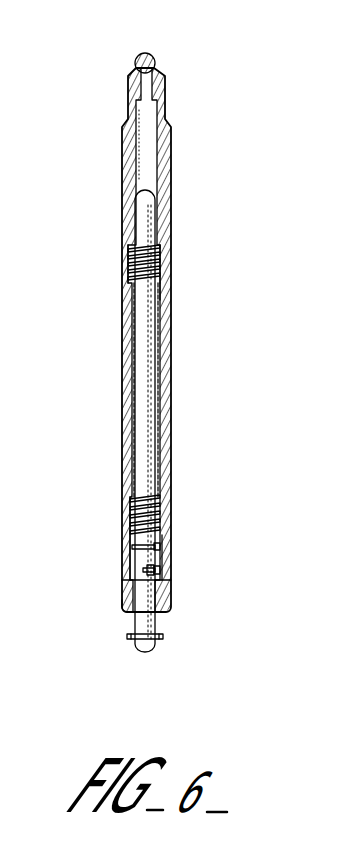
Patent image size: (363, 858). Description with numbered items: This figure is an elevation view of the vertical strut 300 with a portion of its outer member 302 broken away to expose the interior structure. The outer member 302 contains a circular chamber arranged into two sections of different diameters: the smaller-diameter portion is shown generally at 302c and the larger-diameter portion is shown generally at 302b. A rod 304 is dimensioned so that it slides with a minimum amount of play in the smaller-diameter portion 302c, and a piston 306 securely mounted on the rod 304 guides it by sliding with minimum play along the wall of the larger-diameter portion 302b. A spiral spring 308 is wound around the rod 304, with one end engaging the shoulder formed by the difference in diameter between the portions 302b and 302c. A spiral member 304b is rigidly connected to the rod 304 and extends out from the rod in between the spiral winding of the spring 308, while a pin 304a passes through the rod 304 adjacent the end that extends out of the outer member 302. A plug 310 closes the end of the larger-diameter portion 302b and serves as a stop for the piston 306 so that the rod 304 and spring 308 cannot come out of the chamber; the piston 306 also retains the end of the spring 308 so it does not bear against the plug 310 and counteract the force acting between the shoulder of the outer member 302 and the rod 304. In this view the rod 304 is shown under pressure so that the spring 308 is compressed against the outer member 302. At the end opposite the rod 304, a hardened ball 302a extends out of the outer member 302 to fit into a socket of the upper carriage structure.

The vertical strut 300 is at (112, 137).
The outer member 302 is at (167, 97).
The hardened ball 302a is at (154, 58).
The larger-diameter portion of the chamber 302b is at (160, 289).
The smaller-diameter portion of the chamber 302c is at (149, 148).
The rod 304 is at (134, 622).
The pin 304a is at (163, 634).
The spiral member 304b is at (163, 522).
The piston 306 is at (160, 579).
The spiral spring 308 is at (130, 260).
The plug 310 is at (122, 610).